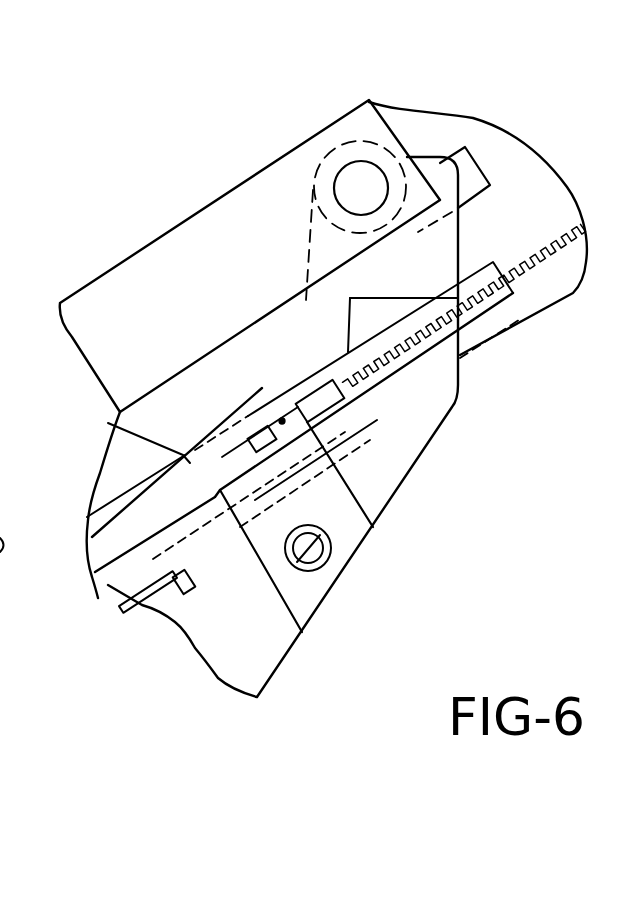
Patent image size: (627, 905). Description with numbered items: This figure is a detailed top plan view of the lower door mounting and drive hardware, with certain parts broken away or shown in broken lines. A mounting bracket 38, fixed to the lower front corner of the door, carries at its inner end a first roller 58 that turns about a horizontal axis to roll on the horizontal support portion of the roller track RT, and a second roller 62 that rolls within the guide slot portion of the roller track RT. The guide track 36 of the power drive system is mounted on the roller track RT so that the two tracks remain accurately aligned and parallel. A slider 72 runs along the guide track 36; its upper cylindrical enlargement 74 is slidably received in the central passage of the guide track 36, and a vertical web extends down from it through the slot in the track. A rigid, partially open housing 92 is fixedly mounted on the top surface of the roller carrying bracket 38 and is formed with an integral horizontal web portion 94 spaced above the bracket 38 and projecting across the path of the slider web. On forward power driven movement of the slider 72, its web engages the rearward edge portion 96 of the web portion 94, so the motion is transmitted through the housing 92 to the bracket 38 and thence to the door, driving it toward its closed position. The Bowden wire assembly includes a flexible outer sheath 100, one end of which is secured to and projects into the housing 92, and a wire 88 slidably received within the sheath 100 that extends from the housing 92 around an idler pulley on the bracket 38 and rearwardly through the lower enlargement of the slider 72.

The roller track RT is at (182, 237).
The guide track 36 is at (97, 420).
The mounting bracket 38 is at (283, 658).
The first roller 58 is at (467, 160).
The second roller 62 is at (343, 143).
The slider 72 is at (280, 419).
The cylindrical enlargement 74 is at (300, 388).
The wire 88 is at (362, 453).
The housing 92 is at (265, 556).
The horizontal web portion 94 is at (382, 302).
The rearward edge portion 96 is at (322, 383).
The flexible outer sheath 100 is at (170, 620).